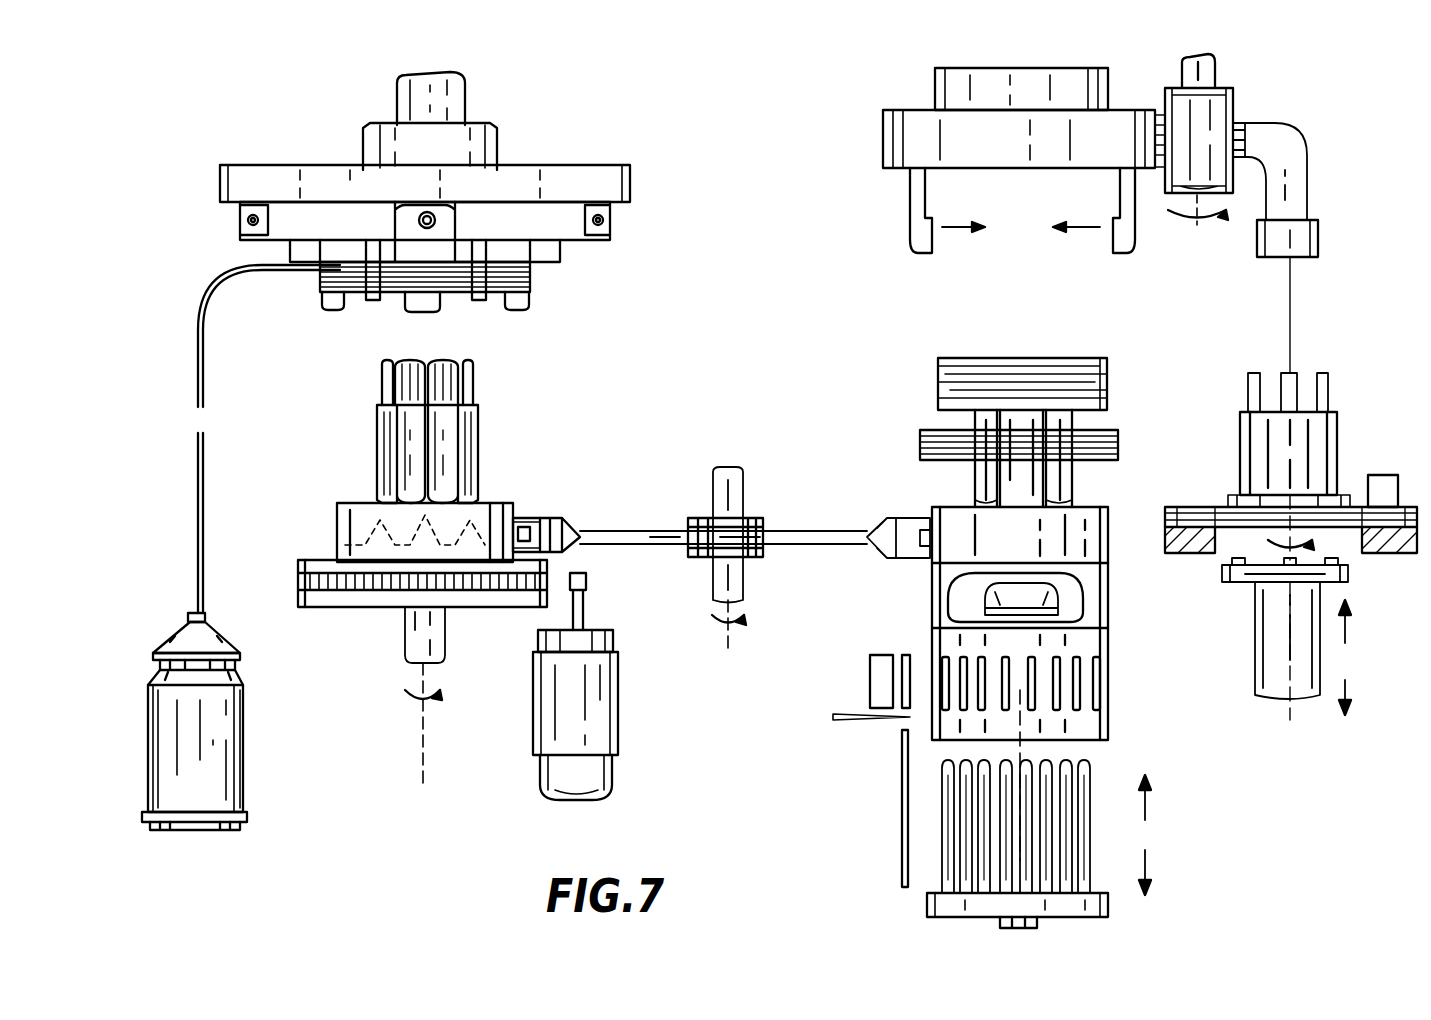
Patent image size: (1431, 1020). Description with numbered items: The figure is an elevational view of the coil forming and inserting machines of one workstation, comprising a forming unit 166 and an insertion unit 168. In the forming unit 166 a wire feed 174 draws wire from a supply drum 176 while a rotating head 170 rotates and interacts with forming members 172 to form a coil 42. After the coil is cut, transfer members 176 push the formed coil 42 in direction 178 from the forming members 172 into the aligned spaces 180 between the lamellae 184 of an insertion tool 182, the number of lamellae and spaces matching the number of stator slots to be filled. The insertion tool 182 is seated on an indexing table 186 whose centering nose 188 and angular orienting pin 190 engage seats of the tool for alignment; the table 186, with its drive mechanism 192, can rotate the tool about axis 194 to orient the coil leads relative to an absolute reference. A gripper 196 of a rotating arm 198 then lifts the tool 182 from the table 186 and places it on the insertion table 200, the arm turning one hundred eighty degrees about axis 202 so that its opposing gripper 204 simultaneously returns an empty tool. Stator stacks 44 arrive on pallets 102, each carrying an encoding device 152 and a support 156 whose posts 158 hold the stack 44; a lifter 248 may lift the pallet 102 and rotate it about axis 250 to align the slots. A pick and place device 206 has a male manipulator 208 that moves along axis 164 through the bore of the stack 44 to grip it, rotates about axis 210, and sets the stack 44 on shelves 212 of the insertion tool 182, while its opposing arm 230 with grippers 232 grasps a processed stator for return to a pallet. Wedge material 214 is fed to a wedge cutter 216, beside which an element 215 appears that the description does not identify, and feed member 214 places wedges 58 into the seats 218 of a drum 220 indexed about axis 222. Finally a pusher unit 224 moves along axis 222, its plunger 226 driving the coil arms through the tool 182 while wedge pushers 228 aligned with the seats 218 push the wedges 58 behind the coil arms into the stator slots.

The direction 178 is at (363, 62).
The rotating head 170 is at (553, 172).
The supply drum 176 is at (395, 205).
The forming members 172 is at (538, 300).
The wire feed 174 is at (205, 500).
The forming unit 166 is at (332, 378).
The spaces 180 is at (392, 360).
The lamellae 184 is at (380, 466).
The shelves 212 is at (478, 402).
The angular orienting pin 190 is at (343, 545).
The centering nose 188 is at (472, 525).
The gripper 196 is at (568, 520).
The indexing table 186 is at (392, 607).
The axis 194 is at (418, 745).
The rotating arm 198 is at (635, 545).
The axis 202 is at (725, 630).
The opposing gripper 204 is at (866, 530).
The drive mechanism 192 is at (620, 740).
The stator stack 44 is at (938, 383).
The insertion unit 168 is at (840, 378).
The coil 42 is at (1118, 449).
The insertion tool 182 is at (592, 420).
The insertion table 200 is at (1108, 612).
The plunger 226 is at (1055, 596).
The seats 218 is at (1050, 718).
The drum 220 is at (1108, 735).
The axis 222 is at (1020, 870).
The wedge pushers 228 is at (1000, 772).
The material 214 is at (900, 845).
The pusher unit 224 is at (886, 878).
The wedges 58 is at (908, 655).
The needle hub 215 is at (872, 658).
The wedge cutter 216 is at (833, 718).
The opposing arm 230 is at (884, 142).
The grippers 232 is at (935, 252).
The axis 164 is at (1240, 88).
The male manipulator 208 is at (1318, 240).
The axis 210 is at (1197, 232).
The pick and place device 206 is at (1242, 292).
The axis 250 is at (1292, 310).
The posts 158 is at (1326, 382).
The support 156 is at (1333, 425).
The encoding device 152 is at (1365, 480).
The pallet 102 is at (1195, 505).
The lifter 248 is at (1322, 587).